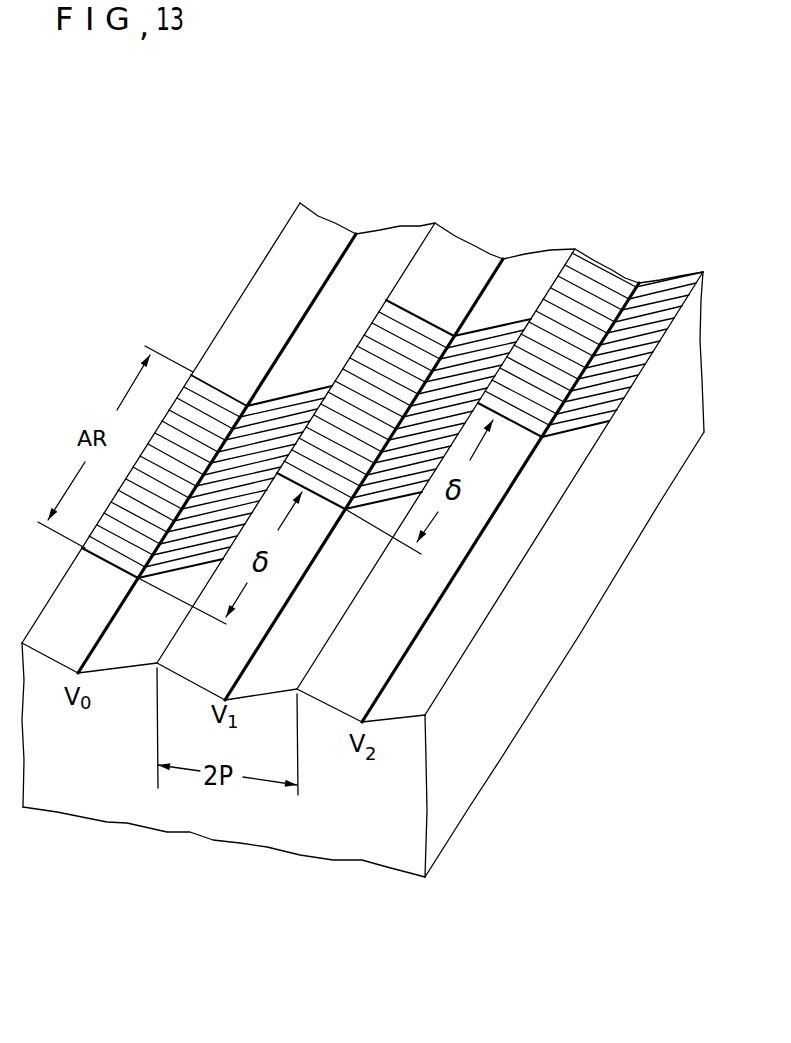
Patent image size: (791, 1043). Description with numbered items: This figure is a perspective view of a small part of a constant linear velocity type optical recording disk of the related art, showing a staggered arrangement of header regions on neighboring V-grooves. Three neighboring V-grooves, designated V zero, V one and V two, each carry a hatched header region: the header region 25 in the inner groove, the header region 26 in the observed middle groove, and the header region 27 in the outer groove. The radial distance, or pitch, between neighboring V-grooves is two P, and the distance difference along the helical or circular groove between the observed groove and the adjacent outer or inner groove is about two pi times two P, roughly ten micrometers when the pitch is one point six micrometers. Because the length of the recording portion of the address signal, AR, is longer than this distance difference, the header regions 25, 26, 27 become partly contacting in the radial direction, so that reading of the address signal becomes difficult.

The header region 25 is at (210, 398).
The header region 26 is at (407, 330).
The header region 27 is at (592, 297).